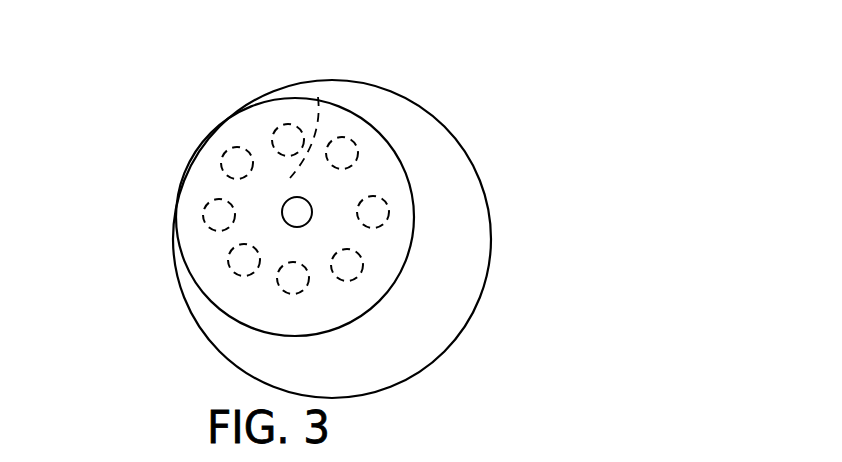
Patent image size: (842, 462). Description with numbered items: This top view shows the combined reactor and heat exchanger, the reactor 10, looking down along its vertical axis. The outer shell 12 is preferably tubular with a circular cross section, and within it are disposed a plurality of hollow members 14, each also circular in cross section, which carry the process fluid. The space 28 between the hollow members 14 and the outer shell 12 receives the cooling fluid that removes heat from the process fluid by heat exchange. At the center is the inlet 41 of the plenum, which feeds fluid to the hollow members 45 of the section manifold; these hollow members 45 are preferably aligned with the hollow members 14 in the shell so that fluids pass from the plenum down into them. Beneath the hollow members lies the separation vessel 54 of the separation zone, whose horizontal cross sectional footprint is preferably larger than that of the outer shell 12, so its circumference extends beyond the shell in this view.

The reactor 10 is at (448, 82).
The outer shell 12 is at (395, 278).
The hollow member 14 is at (272, 124).
The space 28 is at (317, 92).
The inlet 41 is at (283, 212).
The hollow members 45 is at (240, 260).
The separation vessel 54 is at (482, 181).